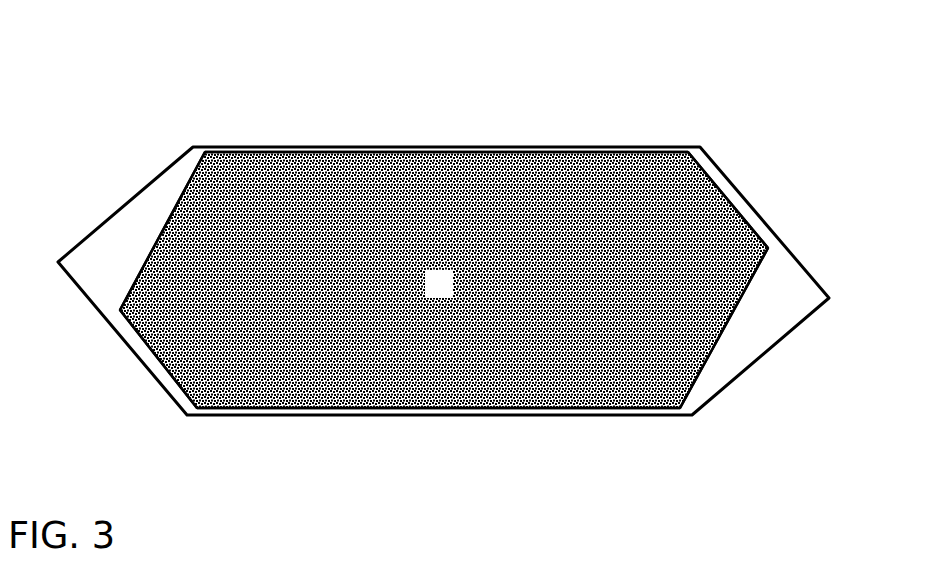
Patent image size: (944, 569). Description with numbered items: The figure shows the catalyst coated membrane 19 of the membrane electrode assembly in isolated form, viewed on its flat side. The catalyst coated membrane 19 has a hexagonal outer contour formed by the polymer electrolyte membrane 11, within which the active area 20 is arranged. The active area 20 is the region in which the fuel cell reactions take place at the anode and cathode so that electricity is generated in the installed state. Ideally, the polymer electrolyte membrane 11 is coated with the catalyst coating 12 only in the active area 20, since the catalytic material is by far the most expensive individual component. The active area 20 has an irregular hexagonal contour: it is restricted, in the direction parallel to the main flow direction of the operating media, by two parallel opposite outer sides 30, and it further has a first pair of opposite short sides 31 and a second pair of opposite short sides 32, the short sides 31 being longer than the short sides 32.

The catalyst coated membrane 19 is at (233, 91).
The polymer electrolyte membrane 11 is at (153, 198).
The catalyst coating 12 is at (388, 175).
The active area 20 is at (451, 296).
The outer sides 30 is at (502, 136).
The first pair of short sides 31 is at (142, 238).
The second pair of short sides 32 is at (738, 188).